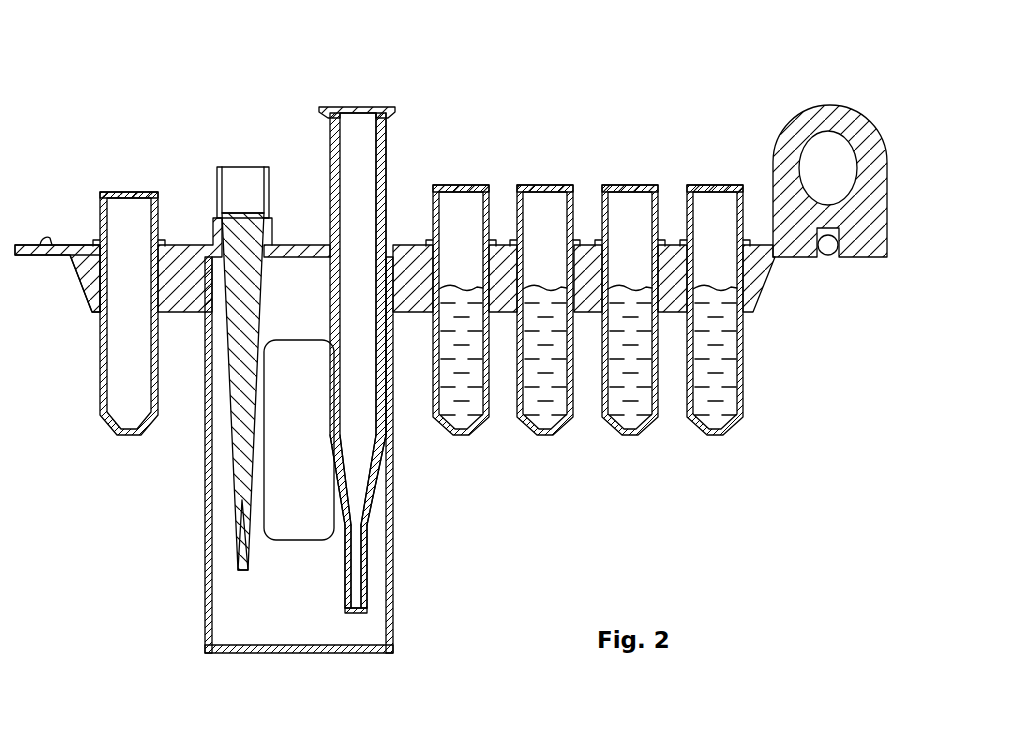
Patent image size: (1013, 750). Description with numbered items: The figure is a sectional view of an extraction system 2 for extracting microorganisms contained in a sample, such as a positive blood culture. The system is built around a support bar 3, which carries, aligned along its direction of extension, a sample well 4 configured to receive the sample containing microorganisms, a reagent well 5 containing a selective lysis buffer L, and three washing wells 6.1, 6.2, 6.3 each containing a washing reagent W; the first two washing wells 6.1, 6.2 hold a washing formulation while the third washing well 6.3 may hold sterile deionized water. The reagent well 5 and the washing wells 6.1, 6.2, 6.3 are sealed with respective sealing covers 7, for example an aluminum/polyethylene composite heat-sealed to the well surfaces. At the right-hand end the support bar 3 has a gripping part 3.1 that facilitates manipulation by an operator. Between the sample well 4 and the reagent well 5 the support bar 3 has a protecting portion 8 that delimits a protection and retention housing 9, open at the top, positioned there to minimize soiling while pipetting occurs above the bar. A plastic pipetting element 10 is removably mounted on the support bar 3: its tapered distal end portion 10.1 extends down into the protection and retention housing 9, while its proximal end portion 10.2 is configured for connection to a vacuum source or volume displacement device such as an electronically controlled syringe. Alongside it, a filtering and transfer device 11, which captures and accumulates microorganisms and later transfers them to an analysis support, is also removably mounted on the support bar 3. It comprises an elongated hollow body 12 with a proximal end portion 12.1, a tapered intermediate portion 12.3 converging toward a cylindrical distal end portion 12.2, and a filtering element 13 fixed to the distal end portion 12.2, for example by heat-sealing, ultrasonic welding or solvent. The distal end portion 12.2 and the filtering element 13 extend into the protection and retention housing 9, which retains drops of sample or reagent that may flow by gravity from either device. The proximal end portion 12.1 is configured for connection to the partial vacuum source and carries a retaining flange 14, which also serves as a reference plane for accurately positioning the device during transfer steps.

The extraction system 2 is at (625, 141).
The support bar 3 is at (758, 271).
The gripping part 3.1 is at (845, 118).
The sample well 4 is at (100, 372).
The reagent well 5 is at (459, 437).
The washing well 6.1 is at (568, 426).
The washing well 6.2 is at (647, 430).
The washing well 6.3 is at (735, 436).
The sealing cover 7 is at (532, 186).
The protecting portion 8 is at (392, 607).
The protection and retention housing 9 is at (304, 455).
The pipetting element 10 is at (238, 408).
The tapered distal end portion 10.1 is at (240, 512).
The proximal end portion 10.2 is at (218, 176).
The filtering and transfer device 11 is at (377, 178).
The hollow body 12 is at (336, 392).
The proximal end portion 12.1 is at (380, 140).
The distal end portion 12.2 is at (366, 582).
The tapered intermediate portion 12.3 is at (343, 493).
The filtering element 13 is at (353, 616).
The retaining flange 14 is at (323, 106).
The selective lysis buffer L is at (450, 368).
The washing reagent W is at (703, 342).